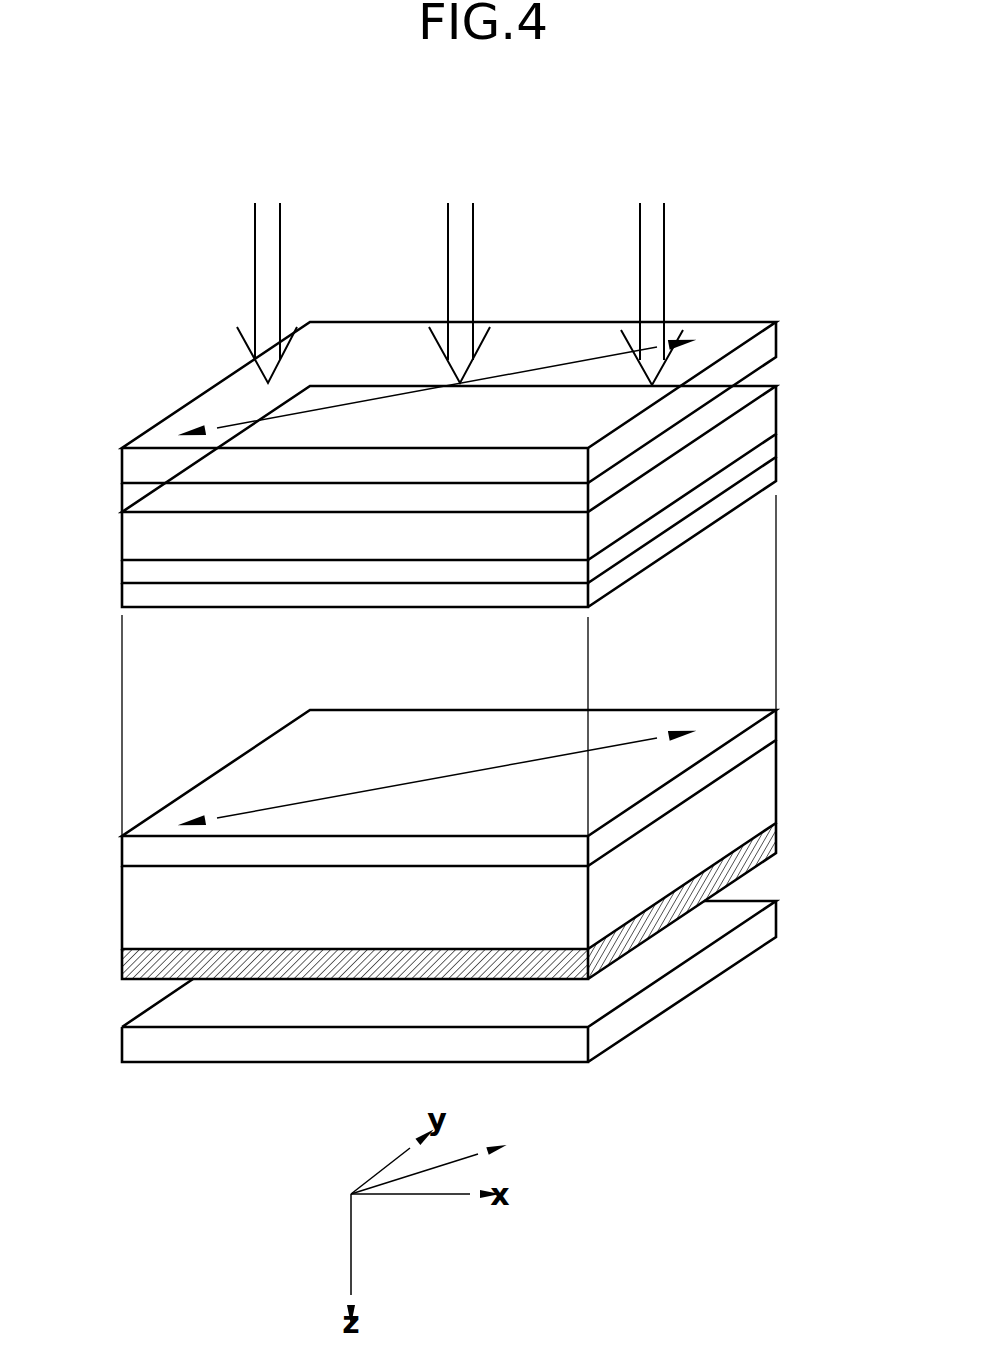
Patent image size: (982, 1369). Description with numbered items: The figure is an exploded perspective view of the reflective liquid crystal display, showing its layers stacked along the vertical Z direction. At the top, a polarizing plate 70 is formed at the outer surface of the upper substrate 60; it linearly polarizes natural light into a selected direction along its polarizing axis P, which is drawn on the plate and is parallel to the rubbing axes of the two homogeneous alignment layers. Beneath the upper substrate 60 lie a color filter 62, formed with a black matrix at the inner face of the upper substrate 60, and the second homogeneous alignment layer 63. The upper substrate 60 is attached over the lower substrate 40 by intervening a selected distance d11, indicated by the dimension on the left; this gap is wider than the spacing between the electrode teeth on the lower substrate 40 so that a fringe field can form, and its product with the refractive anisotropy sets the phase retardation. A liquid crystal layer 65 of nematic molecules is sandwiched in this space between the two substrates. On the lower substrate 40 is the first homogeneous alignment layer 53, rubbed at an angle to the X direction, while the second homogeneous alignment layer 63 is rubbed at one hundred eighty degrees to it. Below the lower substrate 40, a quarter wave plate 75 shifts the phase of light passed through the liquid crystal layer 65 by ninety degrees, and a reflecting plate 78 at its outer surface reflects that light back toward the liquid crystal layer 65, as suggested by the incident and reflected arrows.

The polarizing plate 70 is at (768, 344).
The upper substrate 60 is at (768, 417).
The color filter 62 is at (768, 452).
The second homogeneous alignment layer 63 is at (768, 485).
The liquid crystal layer 65 is at (768, 619).
The first homogeneous alignment layer 53 is at (768, 735).
The lower substrate 40 is at (768, 782).
The quarter wave plate 75 is at (777, 843).
The reflecting plate 78 is at (768, 925).
The polarizing axis P is at (548, 345).
The distance between substrates (cell gap) d11 is at (57, 582).